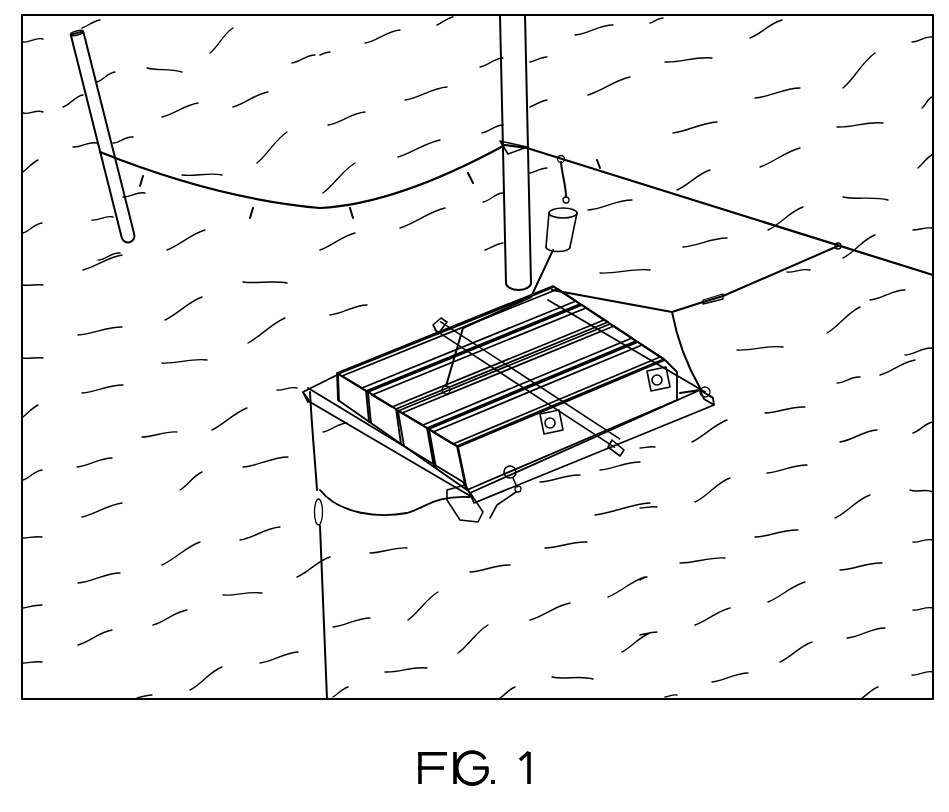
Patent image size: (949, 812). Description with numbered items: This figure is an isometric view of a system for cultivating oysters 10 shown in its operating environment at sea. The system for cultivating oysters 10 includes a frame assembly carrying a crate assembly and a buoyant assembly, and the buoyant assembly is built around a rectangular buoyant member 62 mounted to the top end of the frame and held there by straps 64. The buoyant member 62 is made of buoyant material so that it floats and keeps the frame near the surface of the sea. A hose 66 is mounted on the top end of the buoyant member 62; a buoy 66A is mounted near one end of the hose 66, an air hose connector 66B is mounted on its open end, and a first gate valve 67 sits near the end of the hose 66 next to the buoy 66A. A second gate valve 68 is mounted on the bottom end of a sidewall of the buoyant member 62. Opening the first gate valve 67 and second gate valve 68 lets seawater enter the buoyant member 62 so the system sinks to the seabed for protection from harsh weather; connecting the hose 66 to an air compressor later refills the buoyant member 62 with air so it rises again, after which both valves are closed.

The system for cultivating oysters 10 is at (335, 363).
The buoyant member 62 is at (553, 318).
The straps 64 is at (313, 466).
The hose 66 is at (546, 285).
The buoy 66A is at (578, 234).
The air hose connector 66B is at (566, 160).
The first gate valve 67 is at (570, 198).
The second gate valve 68 is at (484, 508).